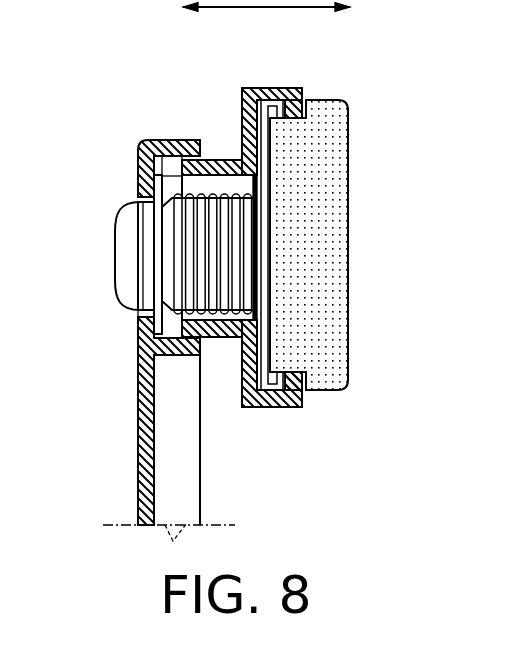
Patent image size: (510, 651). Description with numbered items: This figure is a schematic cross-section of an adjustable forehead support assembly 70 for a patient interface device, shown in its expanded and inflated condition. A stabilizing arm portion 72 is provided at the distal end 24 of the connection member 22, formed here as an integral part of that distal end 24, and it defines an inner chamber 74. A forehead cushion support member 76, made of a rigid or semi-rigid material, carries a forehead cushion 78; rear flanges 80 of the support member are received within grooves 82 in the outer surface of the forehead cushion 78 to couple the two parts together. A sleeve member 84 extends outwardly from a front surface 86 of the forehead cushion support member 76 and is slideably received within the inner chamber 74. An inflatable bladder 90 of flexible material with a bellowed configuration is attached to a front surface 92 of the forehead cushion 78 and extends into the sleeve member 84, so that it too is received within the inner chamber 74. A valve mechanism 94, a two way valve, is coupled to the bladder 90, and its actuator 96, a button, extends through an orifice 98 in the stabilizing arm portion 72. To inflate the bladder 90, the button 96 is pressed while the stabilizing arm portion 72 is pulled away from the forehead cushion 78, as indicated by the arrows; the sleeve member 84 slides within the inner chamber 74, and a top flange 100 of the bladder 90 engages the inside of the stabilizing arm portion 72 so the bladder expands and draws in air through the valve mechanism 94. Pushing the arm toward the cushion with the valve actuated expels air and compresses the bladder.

The adjustable forehead support assembly 70 is at (106, 95).
The stabilizing arm portion 72 is at (142, 143).
The inner chamber 74 is at (171, 166).
The forehead cushion support member 76 is at (279, 88).
The forehead cushion 78 is at (332, 222).
The rear flanges 80 is at (302, 96).
The grooves 82 is at (283, 120).
The sleeve member 84 is at (211, 160).
The front surface 86 is at (242, 390).
The inflatable bladder 90 is at (230, 254).
The front surface 92 is at (270, 290).
The valve mechanism 94 is at (118, 279).
The actuator 96 is at (125, 244).
The orifice 98 is at (143, 316).
The top flange 100 is at (172, 186).
The connection member 22 is at (200, 490).
The distal end 24 is at (140, 490).